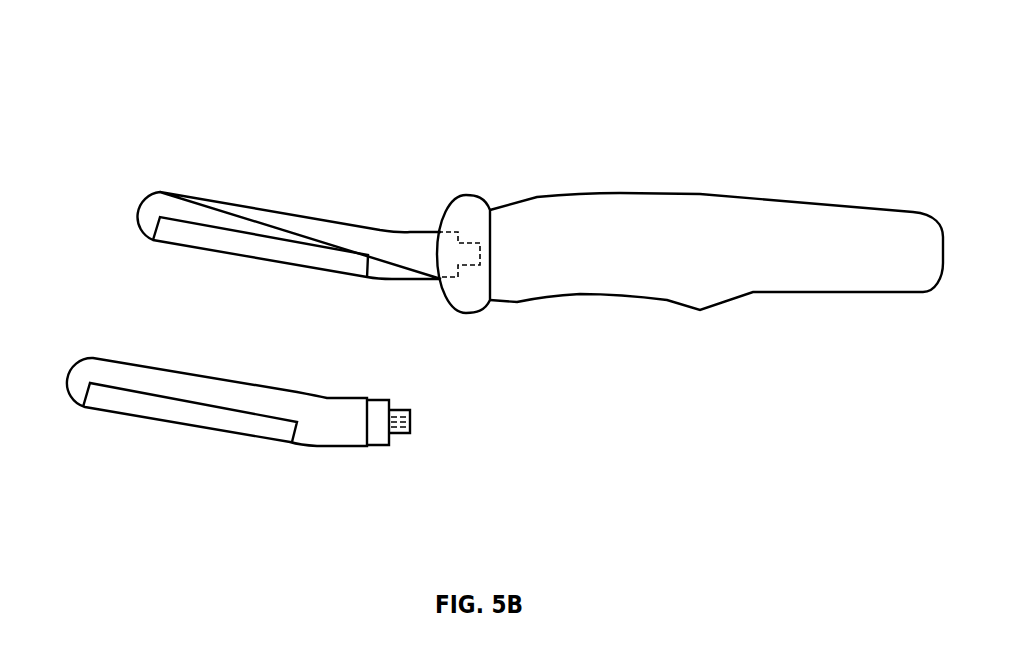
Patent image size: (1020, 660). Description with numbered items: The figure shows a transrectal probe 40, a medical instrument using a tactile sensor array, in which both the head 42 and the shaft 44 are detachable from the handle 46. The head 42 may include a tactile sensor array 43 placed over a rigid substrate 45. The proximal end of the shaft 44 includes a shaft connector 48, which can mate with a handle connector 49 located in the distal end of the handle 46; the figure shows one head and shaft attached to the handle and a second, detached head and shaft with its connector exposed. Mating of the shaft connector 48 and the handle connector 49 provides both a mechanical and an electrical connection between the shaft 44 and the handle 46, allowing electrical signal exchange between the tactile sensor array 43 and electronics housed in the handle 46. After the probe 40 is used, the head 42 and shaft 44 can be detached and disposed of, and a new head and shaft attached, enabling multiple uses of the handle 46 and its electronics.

The transrectal probe 40 is at (614, 113).
The head 42 is at (251, 322).
The tactile sensor array 43 is at (250, 250).
The shaft 44 is at (417, 279).
The rigid substrate 45 is at (300, 230).
The handle 46 is at (717, 193).
The shaft connector 48 is at (412, 422).
The handle connector 49 is at (488, 246).